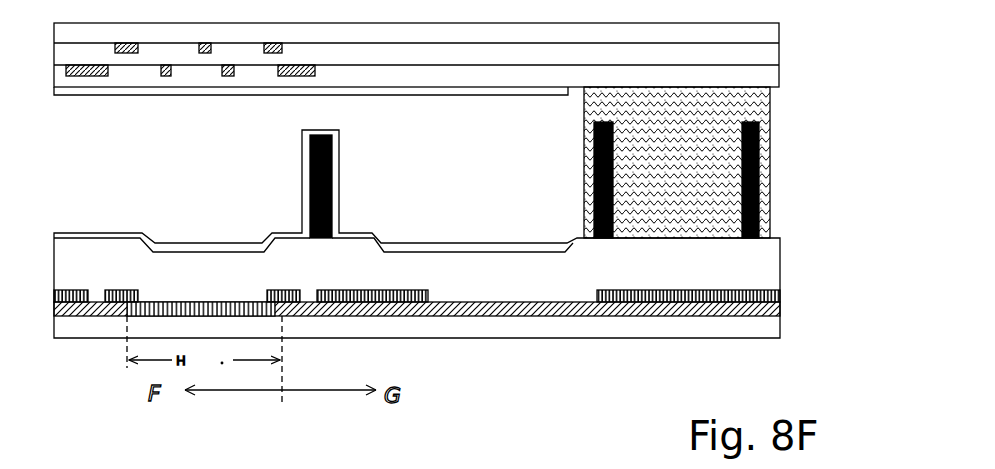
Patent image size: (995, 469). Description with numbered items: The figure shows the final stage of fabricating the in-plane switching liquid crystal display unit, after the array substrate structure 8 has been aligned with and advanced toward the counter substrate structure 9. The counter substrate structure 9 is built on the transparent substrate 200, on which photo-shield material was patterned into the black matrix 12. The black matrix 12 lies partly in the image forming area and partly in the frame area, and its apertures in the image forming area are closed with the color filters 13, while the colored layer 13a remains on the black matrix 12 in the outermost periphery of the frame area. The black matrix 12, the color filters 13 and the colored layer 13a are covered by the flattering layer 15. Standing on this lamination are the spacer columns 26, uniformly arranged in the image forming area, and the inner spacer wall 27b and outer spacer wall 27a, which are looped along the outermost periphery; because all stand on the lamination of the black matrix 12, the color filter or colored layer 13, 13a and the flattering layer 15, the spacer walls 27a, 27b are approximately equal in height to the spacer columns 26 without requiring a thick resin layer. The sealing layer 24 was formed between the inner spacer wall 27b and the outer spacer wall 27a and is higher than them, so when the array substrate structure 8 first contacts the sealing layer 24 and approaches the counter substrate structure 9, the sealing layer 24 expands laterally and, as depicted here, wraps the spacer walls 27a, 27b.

The array substrate structure 8 is at (798, 52).
The counter substrate structure 9 is at (798, 273).
The black matrix 12 is at (517, 316).
The color filter 13 is at (252, 316).
The colored layer 13a is at (700, 298).
The flattering layer 15 is at (770, 277).
The sealing layer 24 is at (771, 100).
The spacer column 26 is at (333, 176).
The outer spacer wall 27a is at (760, 170).
The inner spacer wall 27b is at (582, 198).
The transparent substrate 200 is at (353, 328).